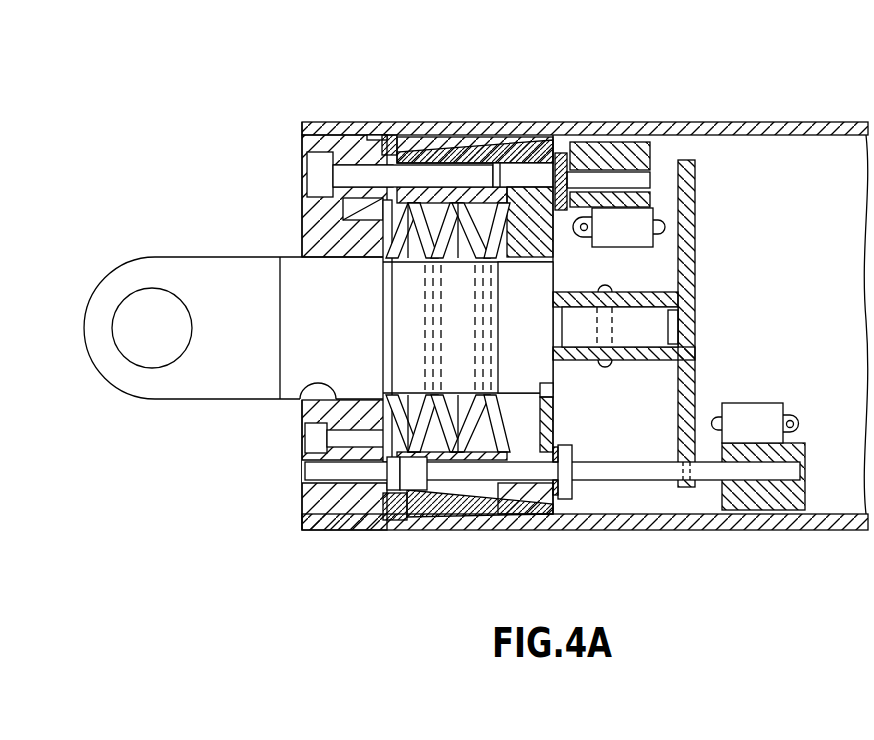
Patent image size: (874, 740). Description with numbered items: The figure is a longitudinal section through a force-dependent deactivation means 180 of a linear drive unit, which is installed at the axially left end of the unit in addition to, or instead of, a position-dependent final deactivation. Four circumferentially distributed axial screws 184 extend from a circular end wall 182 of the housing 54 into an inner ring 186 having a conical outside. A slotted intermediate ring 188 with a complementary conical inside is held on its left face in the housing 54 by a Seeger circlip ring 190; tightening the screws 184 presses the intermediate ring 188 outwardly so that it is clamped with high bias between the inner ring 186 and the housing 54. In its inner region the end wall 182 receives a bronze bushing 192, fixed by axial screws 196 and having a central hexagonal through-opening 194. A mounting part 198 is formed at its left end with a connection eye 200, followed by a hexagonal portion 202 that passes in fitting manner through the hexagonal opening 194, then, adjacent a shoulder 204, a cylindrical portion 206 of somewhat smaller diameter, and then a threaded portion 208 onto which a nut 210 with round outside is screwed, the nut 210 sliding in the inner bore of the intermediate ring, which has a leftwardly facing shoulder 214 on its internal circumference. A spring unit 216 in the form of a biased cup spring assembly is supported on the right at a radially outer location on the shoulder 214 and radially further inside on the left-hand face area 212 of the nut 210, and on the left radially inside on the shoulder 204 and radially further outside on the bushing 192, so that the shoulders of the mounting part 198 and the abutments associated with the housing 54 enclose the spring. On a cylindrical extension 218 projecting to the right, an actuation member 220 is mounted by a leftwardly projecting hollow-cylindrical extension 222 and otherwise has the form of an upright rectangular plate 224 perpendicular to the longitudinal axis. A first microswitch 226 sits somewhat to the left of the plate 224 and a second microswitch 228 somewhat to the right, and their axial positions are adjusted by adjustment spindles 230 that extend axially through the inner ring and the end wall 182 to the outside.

The housing 54 is at (822, 122).
The force-dependent deactivation means 180 is at (356, 96).
The end wall 182 is at (318, 142).
The axial screws 184 is at (325, 180).
The inner ring 186 is at (518, 135).
The intermediate ring 188 is at (428, 155).
The Seeger circlip ring 190 is at (388, 132).
The bushing 192 is at (312, 233).
The hexagonal through-opening 194 is at (300, 397).
The axial screws 196 is at (305, 445).
The mounting part 198 is at (193, 408).
The connection eye 200 is at (137, 312).
The hexagonal portion 202 is at (307, 303).
The shoulder 204 is at (448, 140).
The cylindrical portion 206 is at (457, 305).
The threaded portion 208 is at (502, 313).
The nut 210 is at (548, 433).
The left-hand face area 212 is at (550, 401).
The shoulder 214 is at (515, 205).
The spring unit 216 is at (432, 470).
The cylindrical extension 218 is at (655, 335).
The actuation member 220 is at (688, 258).
The hollow-cylindrical extension 222 is at (630, 298).
The plate 224 is at (688, 180).
The first microswitch 226 is at (630, 225).
The second microswitch 228 is at (750, 418).
The adjustment spindles 230 is at (650, 178).